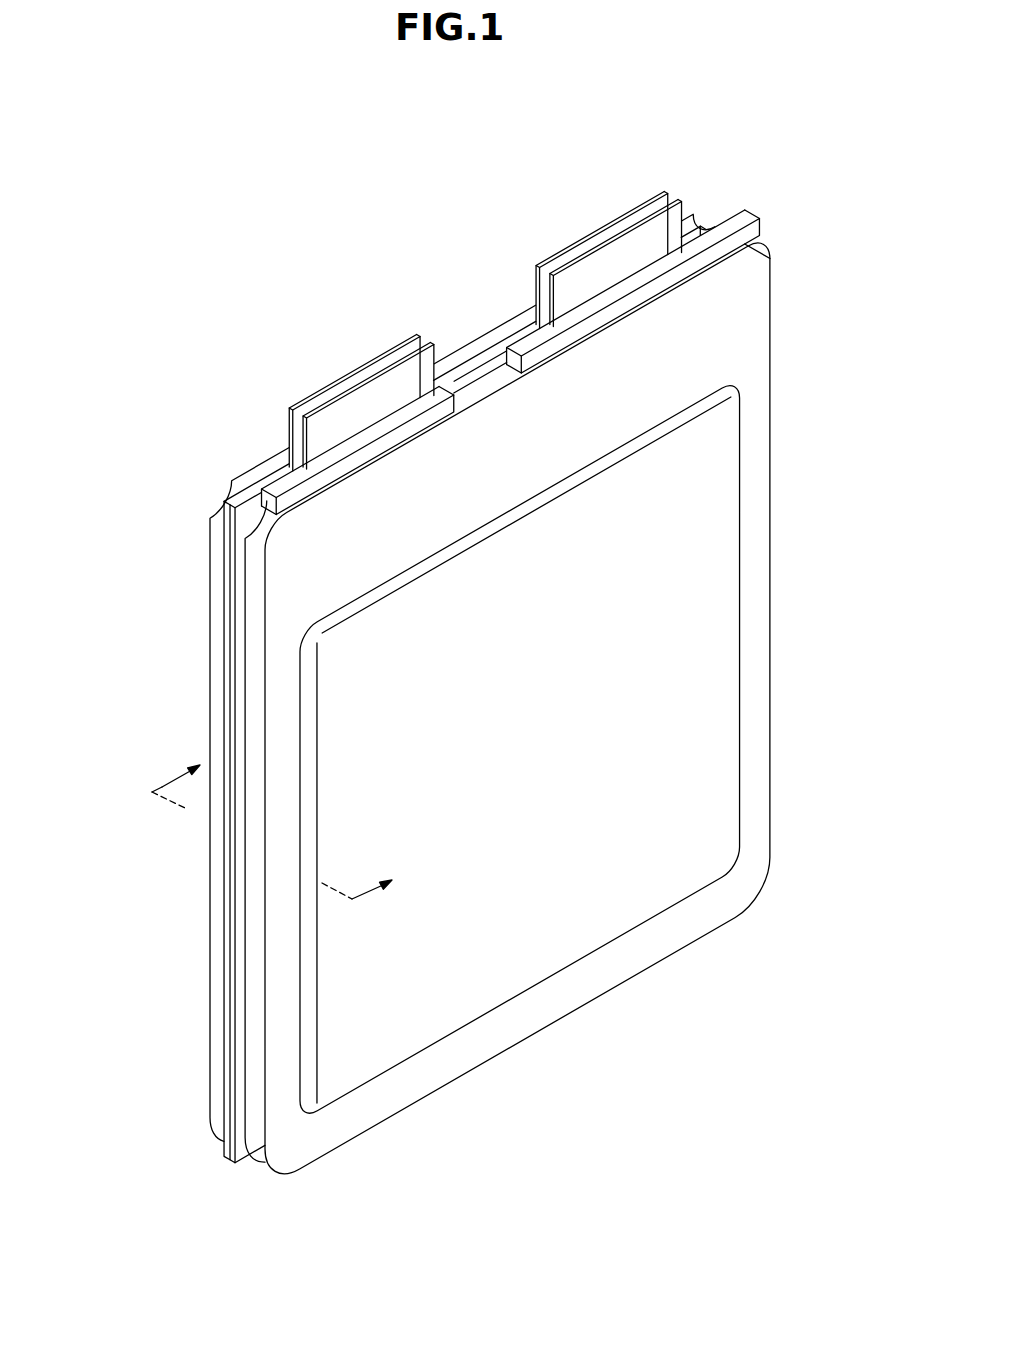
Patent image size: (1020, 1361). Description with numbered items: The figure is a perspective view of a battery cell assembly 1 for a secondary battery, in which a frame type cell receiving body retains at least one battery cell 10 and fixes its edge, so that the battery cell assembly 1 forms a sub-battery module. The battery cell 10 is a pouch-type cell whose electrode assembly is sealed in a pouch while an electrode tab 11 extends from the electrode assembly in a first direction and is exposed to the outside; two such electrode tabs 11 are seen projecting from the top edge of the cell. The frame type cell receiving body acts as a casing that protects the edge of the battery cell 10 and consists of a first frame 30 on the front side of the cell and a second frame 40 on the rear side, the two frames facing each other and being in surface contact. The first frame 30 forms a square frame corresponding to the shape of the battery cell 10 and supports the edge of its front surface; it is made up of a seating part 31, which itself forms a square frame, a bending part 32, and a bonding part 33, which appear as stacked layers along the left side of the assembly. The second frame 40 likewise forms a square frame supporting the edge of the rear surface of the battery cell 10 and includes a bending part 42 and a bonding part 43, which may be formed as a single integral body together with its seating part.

The battery cell assembly 1 is at (188, 315).
The battery cell 10 is at (702, 660).
The electrode tab 11 is at (553, 257).
The first frame 30 is at (417, 760).
The seating part 31 is at (282, 626).
The bending part 32 is at (257, 577).
The bonding part 33 is at (122, 650).
The second frame 40 is at (422, 687).
The bending part 42 is at (219, 492).
The bonding part 43 is at (247, 496).